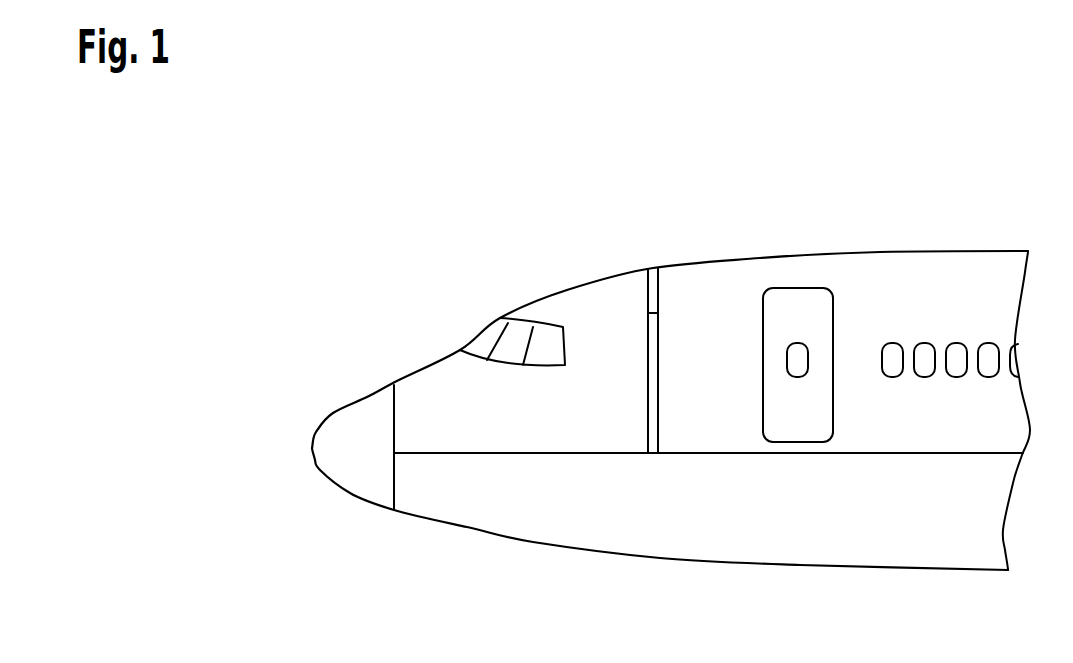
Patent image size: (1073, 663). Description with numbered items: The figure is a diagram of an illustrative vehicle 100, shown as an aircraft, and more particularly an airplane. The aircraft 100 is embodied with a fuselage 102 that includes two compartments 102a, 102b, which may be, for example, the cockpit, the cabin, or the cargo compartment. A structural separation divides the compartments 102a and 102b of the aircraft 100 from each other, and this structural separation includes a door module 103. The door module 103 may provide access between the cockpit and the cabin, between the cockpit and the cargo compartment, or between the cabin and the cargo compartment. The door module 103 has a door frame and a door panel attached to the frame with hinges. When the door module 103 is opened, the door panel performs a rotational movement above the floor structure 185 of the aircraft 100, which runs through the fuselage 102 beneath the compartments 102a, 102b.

The aircraft 100 is at (670, 395).
The fuselage 102 is at (891, 240).
The compartment 102a is at (528, 422).
The compartment 102b is at (710, 417).
The door module 103 is at (645, 343).
The floor structure 185 is at (670, 453).